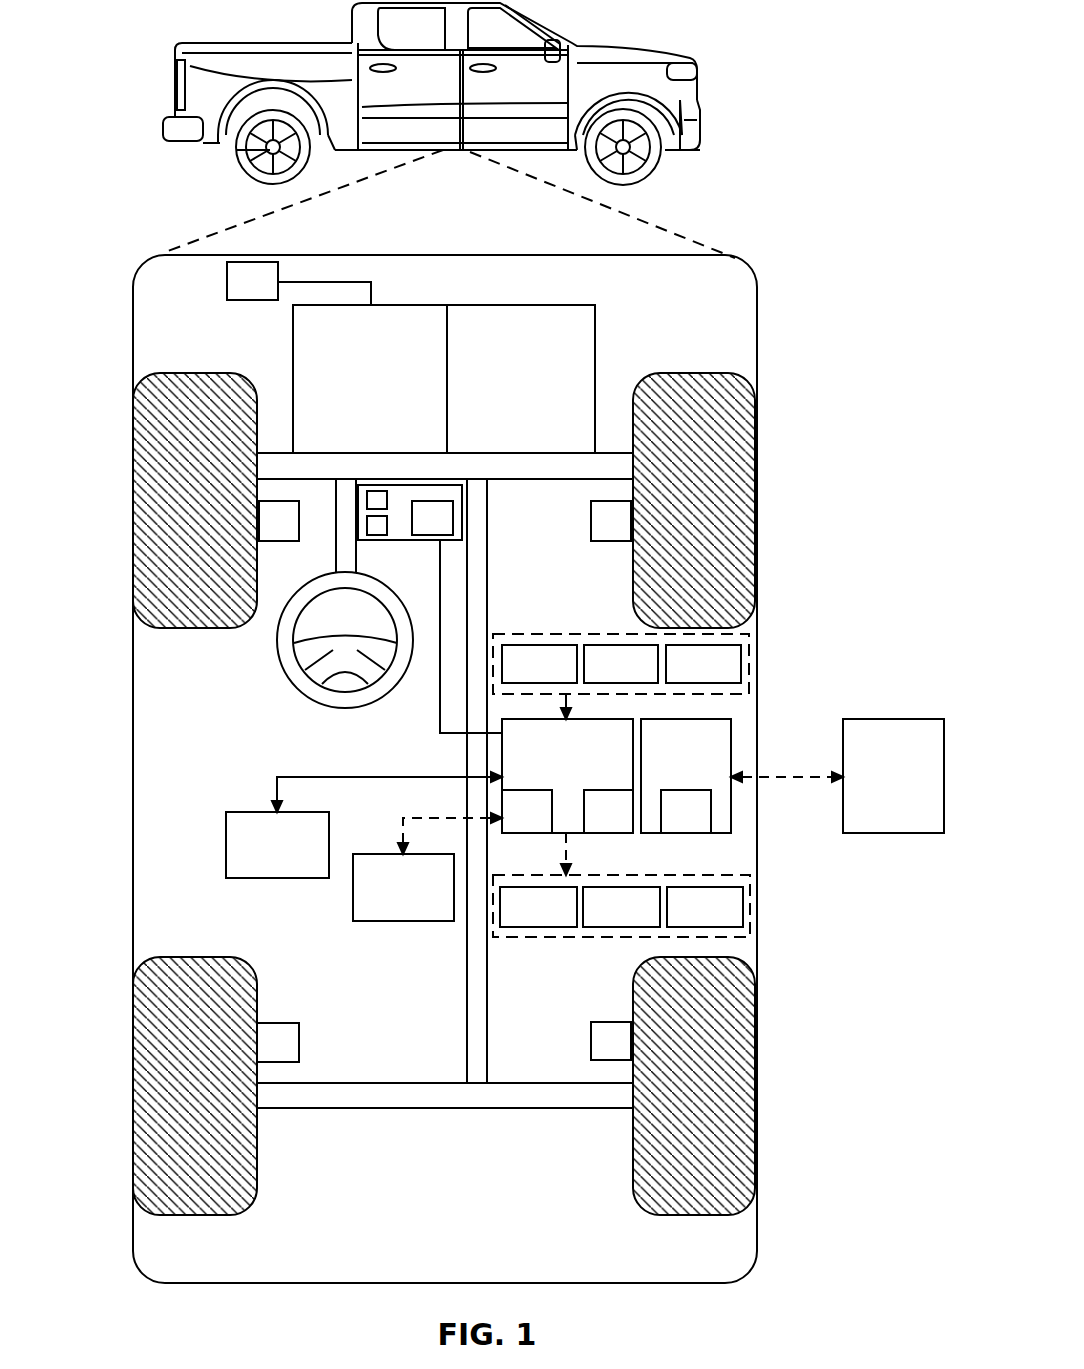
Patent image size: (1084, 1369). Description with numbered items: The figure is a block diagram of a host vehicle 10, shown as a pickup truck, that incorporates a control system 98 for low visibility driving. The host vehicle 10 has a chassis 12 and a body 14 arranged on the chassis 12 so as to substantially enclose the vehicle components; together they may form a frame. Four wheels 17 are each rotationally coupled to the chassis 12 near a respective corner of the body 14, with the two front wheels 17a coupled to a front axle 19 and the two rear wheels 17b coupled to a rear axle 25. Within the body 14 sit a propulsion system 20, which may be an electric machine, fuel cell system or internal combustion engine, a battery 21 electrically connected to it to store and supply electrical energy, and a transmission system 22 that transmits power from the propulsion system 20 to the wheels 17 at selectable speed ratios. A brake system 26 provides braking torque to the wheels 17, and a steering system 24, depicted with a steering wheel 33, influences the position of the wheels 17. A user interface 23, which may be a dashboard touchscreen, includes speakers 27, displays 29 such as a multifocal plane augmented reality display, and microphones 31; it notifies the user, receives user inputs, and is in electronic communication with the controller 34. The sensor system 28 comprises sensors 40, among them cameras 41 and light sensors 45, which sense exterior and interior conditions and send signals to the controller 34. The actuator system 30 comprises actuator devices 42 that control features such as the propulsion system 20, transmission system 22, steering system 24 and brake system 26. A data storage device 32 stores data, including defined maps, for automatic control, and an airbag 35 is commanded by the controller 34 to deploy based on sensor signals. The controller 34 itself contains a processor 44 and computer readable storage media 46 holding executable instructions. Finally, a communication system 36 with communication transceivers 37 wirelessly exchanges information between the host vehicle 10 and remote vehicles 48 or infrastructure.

The host vehicle 10 is at (636, 45).
The chassis 12 is at (466, 957).
The body 14 is at (133, 722).
The wheels 17 is at (196, 373).
The front wheels 17a is at (152, 487).
The rear wheels 17b is at (155, 1082).
The front axle 19 is at (556, 480).
The propulsion system 20 is at (353, 394).
The battery 21 is at (253, 262).
The transmission system 22 is at (504, 394).
The user interface 23 is at (424, 485).
The steering system 24 is at (363, 547).
The rear axle 25 is at (520, 1083).
The brake system 26 is at (264, 534).
The speakers 27 is at (377, 491).
The sensor system 28 is at (582, 632).
The displays 29 is at (365, 528).
The actuator system 30 is at (585, 940).
The microphones 31 is at (417, 531).
The data storage device 32 is at (386, 902).
The steering wheel 33 is at (279, 660).
The controller 34 is at (550, 771).
The airbag 35 is at (260, 859).
The communication system 36 is at (669, 771).
The communication transceivers 37 is at (671, 825).
The sensors 40 is at (525, 678).
The cameras 41 is at (688, 678).
The actuator devices 42 is at (523, 920).
The processor 44 is at (512, 825).
The light sensors 45 is at (606, 678).
The computer readable storage device or media 46 is at (593, 825).
The remote vehicles 48 is at (876, 791).
The control system 98 is at (417, 752).